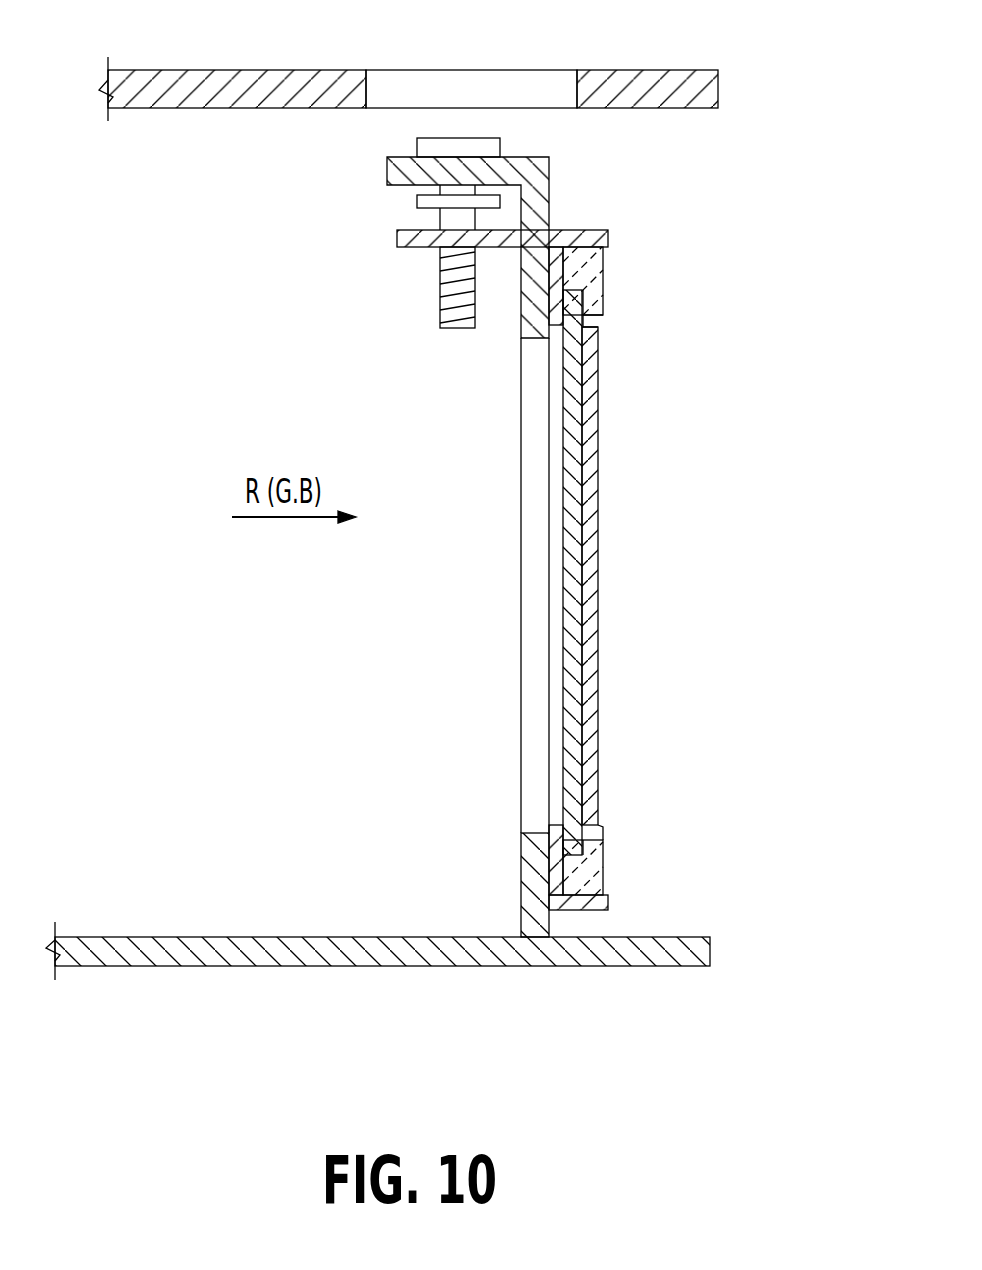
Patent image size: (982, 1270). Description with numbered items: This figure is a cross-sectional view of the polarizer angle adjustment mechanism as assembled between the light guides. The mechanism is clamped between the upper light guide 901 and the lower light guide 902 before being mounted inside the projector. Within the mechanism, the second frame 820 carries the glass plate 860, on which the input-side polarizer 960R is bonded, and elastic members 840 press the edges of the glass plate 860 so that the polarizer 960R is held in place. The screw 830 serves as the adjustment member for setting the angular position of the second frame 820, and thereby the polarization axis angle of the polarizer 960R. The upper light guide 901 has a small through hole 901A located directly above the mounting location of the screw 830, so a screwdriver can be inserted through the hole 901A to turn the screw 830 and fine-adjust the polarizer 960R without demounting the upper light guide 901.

The upper light guide 901 is at (243, 70).
The small through hole 901A is at (535, 70).
The lower light guide 902 is at (470, 972).
The second frame 820 is at (590, 230).
The screw 830 is at (440, 298).
The elastic members 840 is at (603, 279).
The glass plate 860 is at (521, 776).
The input-side polarizer 960R is at (600, 676).